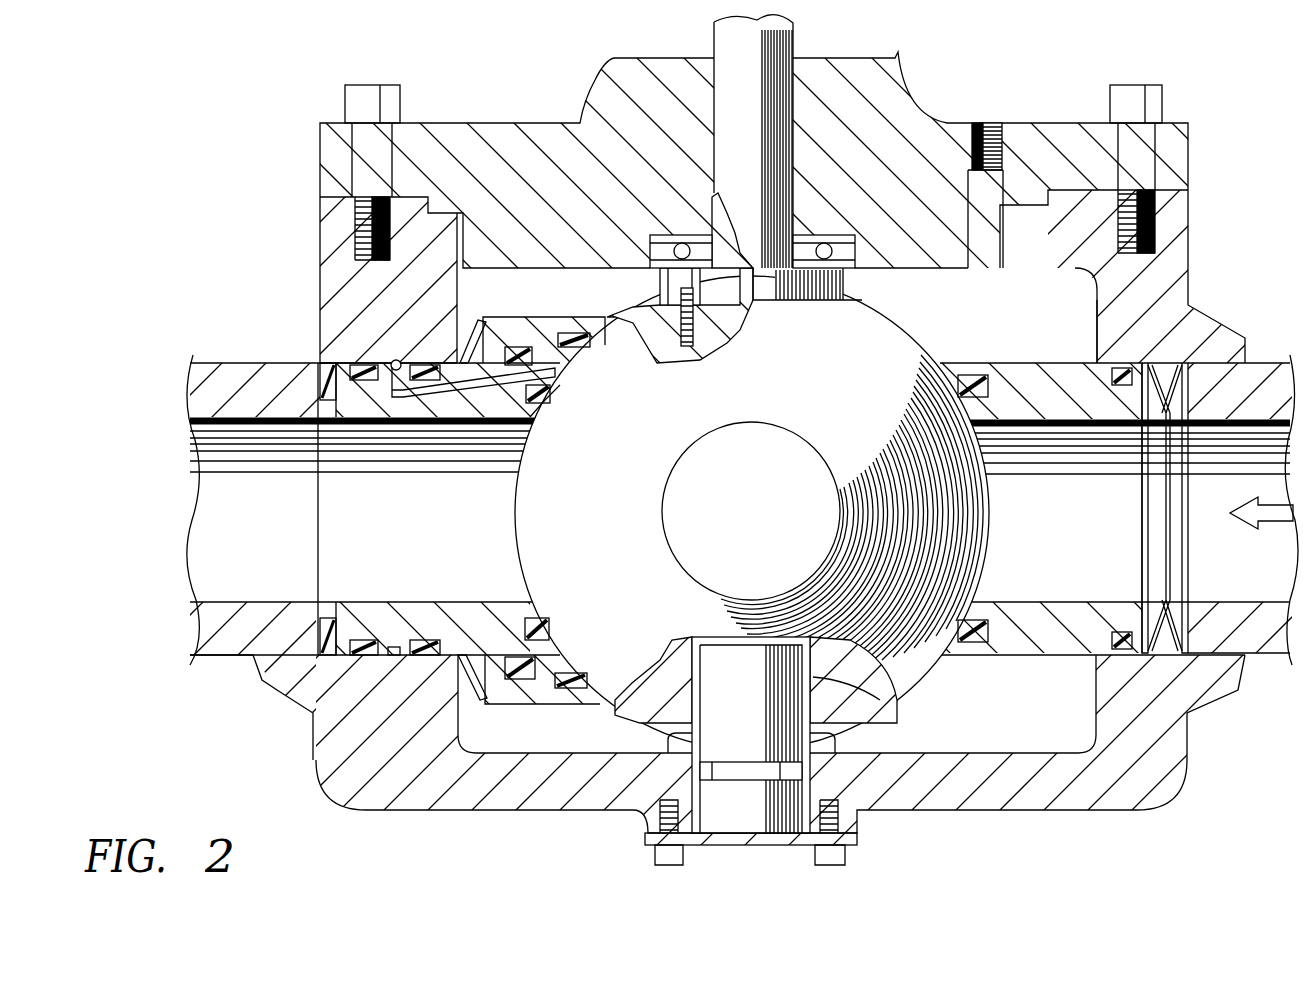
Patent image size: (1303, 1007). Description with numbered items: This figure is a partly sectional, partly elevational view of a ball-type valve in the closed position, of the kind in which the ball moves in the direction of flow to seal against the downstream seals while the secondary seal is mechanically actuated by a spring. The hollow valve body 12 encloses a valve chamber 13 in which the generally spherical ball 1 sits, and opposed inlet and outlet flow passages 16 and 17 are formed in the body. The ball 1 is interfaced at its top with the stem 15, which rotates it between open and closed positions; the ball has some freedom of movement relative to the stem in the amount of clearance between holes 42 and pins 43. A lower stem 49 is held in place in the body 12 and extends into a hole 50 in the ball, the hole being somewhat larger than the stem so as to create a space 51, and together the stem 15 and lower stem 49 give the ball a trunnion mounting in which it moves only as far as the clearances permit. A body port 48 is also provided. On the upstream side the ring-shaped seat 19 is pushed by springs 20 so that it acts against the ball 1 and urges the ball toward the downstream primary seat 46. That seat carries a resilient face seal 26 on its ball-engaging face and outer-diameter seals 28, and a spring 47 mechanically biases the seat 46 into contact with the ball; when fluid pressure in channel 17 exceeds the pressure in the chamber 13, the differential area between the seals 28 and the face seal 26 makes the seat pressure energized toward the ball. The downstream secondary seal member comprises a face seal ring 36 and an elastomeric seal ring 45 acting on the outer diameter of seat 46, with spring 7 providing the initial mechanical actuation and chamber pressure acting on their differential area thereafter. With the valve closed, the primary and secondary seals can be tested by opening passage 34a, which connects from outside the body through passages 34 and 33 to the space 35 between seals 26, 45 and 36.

The ball element 1 is at (962, 515).
The spring means 7 is at (470, 340).
The valve body 12 is at (1190, 265).
The valve chamber 13 is at (1097, 335).
The stem 15 is at (722, 37).
The inlet flow passage 16 is at (1275, 600).
The outlet flow passage 17 is at (220, 597).
The seal seat member 19 is at (1052, 600).
The springs 20 is at (1158, 605).
The resilient seal 26 is at (550, 396).
The seals 28 is at (392, 645).
The passage 33 is at (466, 425).
The passage 34 is at (385, 665).
The passage 34a is at (392, 360).
The space 35 is at (563, 373).
The face seal ring 36 is at (592, 338).
The holes 42 is at (665, 275).
The pins 43 is at (700, 318).
The elastomeric seal ring 45 is at (527, 352).
The downstream primary seat 46 is at (460, 650).
The spring 47 is at (390, 392).
The body port 48 is at (983, 122).
The lower stem 49 is at (742, 820).
The hole 50 is at (815, 670).
The space 51 is at (815, 705).